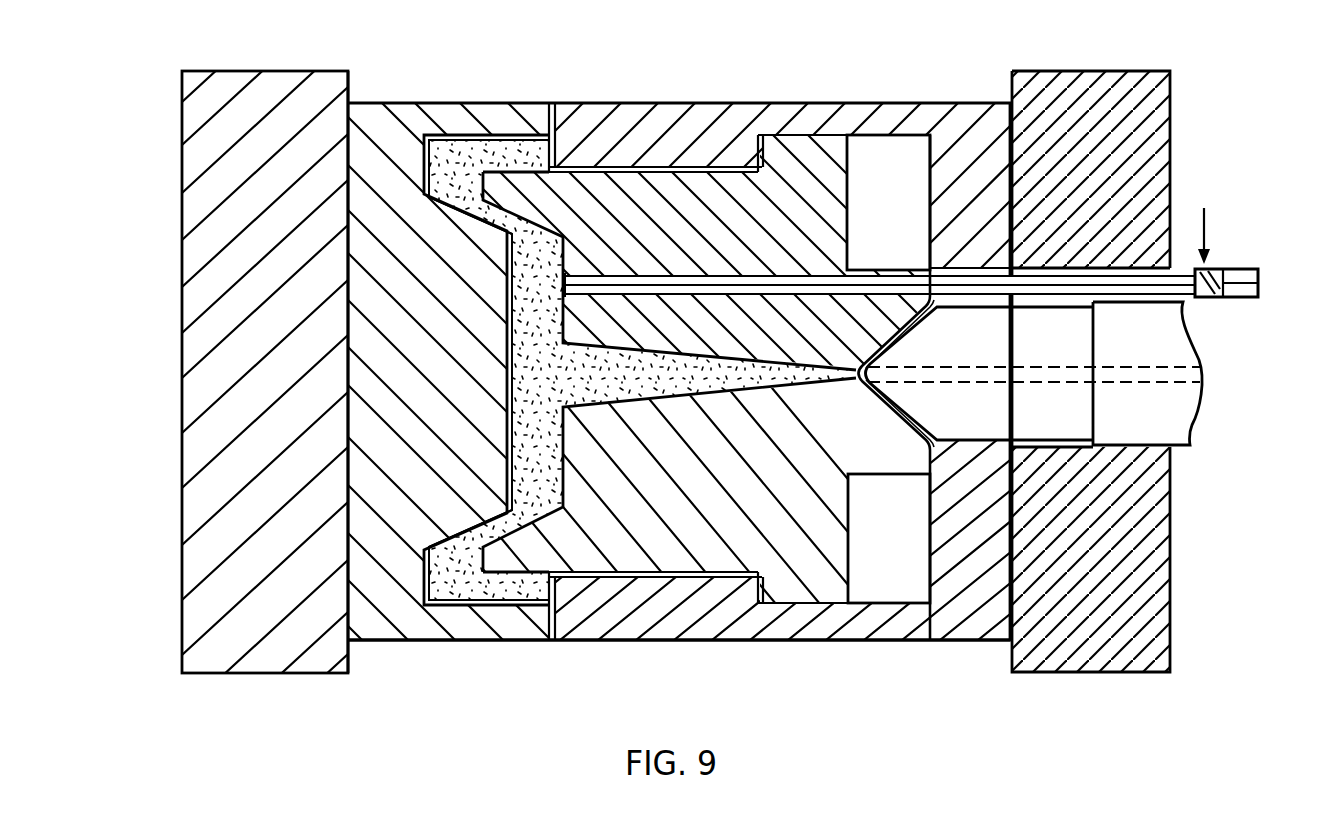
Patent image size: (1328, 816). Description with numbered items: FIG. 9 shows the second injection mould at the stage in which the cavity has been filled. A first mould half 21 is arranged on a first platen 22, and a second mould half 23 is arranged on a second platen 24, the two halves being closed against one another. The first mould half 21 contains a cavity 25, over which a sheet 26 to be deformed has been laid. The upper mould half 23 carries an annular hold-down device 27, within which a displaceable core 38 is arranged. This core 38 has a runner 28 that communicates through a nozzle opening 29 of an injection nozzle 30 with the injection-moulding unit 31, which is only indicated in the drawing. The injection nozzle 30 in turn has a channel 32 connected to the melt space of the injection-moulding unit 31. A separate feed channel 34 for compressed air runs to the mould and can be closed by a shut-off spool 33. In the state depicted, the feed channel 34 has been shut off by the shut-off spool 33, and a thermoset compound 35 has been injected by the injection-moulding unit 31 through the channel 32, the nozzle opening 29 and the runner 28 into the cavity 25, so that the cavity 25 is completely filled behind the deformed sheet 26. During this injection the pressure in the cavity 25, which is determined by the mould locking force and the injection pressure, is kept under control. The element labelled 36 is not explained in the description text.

The first mould half 21 is at (418, 628).
The first platen 22 is at (272, 655).
The second mould half 23 is at (736, 655).
The second platen 24 is at (1076, 655).
The cavity 25 is at (465, 580).
The sheet 26 is at (507, 394).
The annular hold-down device 27 is at (645, 140).
The runner 28 is at (617, 395).
The nozzle opening 29 is at (948, 432).
The injection nozzle 30 is at (998, 413).
The injection-moulding unit 31 is at (1168, 343).
The channel 32 is at (1137, 375).
The shut-off spool 33 is at (567, 285).
The feed channel 34 is at (968, 272).
The thermoset compound 35 is at (489, 370).
The insulating gap 36 is at (552, 102).
The displaceable core 38 is at (775, 537).